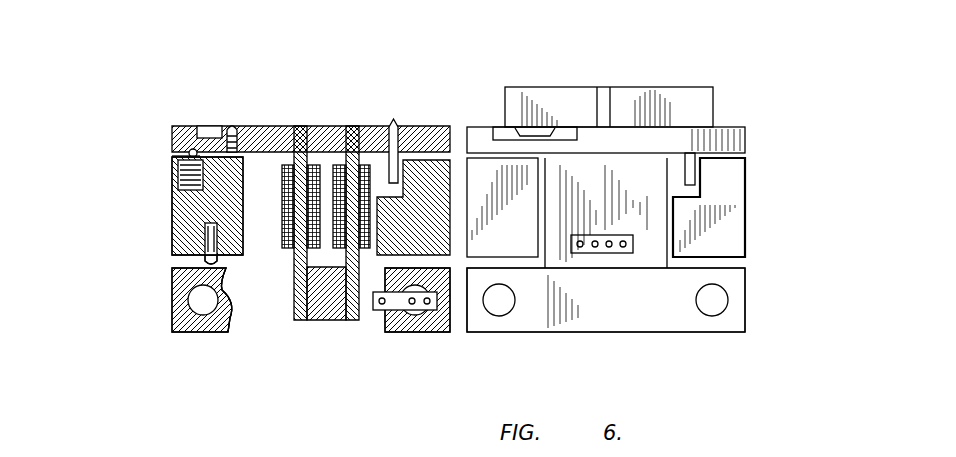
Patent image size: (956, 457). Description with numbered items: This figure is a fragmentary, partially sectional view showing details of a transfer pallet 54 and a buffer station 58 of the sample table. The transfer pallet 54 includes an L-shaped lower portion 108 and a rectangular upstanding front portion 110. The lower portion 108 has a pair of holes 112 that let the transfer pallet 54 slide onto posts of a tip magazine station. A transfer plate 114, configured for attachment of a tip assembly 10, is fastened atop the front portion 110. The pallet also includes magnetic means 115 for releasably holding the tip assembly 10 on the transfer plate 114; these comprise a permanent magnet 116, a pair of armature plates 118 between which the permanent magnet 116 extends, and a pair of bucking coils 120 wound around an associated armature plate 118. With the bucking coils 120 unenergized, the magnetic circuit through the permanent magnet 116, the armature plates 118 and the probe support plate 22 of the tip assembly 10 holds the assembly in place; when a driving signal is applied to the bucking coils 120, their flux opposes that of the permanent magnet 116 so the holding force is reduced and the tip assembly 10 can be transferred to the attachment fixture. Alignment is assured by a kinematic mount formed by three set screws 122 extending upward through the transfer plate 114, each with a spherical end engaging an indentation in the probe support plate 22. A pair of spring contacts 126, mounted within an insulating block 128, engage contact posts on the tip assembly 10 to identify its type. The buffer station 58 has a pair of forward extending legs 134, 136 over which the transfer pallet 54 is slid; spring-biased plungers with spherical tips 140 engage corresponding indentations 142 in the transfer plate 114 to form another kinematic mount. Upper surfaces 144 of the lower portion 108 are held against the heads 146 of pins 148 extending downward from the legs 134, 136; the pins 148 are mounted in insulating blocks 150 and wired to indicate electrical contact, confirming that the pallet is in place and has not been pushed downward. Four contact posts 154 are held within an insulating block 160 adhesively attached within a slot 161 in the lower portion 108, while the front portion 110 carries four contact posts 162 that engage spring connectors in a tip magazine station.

The tip assembly 10 is at (550, 78).
The probe support plate 22 is at (648, 87).
The transfer pallet 54 is at (198, 352).
The buffer station 58 is at (156, 219).
The L-shaped lower portion 108 is at (172, 285).
The rectangular upstanding front portion 110 is at (598, 178).
The hole 112 is at (712, 285).
The transfer plate 114 is at (172, 132).
The magnetic means 115 is at (325, 340).
The permanent magnet 116 is at (335, 320).
The armature plate 118 is at (295, 300).
The bucking coil 120 is at (312, 165).
The set screw 122 is at (256, 128).
The spring contact 126 is at (385, 127).
The insulating block 128 is at (400, 128).
The leg 134 is at (172, 205).
The leg 136 is at (172, 183).
The spherical tip 140 is at (172, 153).
The indentation 142 is at (213, 138).
The upper surface 144 is at (172, 265).
The head 146 is at (222, 264).
The pin 148 is at (172, 254).
The insulating block 150 is at (172, 240).
The contact post 154 is at (415, 333).
The insulating block 160 is at (450, 307).
The slot 161 is at (390, 310).
The contact post 162 is at (610, 253).